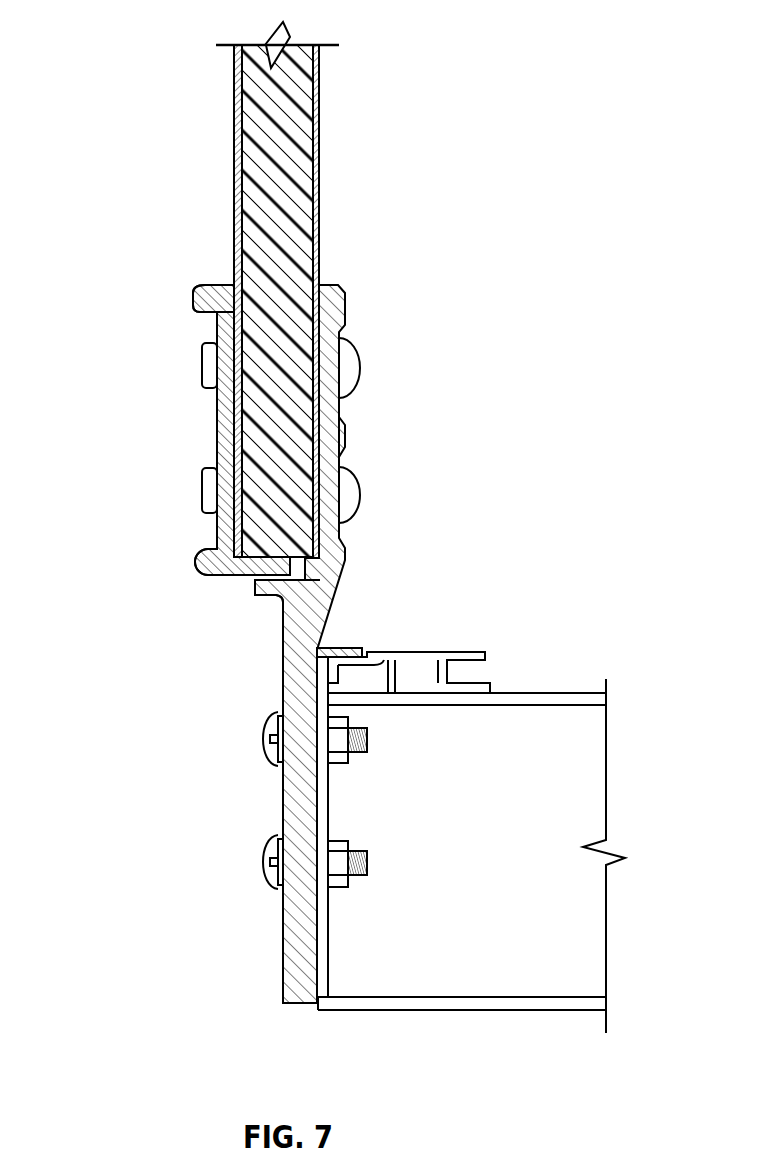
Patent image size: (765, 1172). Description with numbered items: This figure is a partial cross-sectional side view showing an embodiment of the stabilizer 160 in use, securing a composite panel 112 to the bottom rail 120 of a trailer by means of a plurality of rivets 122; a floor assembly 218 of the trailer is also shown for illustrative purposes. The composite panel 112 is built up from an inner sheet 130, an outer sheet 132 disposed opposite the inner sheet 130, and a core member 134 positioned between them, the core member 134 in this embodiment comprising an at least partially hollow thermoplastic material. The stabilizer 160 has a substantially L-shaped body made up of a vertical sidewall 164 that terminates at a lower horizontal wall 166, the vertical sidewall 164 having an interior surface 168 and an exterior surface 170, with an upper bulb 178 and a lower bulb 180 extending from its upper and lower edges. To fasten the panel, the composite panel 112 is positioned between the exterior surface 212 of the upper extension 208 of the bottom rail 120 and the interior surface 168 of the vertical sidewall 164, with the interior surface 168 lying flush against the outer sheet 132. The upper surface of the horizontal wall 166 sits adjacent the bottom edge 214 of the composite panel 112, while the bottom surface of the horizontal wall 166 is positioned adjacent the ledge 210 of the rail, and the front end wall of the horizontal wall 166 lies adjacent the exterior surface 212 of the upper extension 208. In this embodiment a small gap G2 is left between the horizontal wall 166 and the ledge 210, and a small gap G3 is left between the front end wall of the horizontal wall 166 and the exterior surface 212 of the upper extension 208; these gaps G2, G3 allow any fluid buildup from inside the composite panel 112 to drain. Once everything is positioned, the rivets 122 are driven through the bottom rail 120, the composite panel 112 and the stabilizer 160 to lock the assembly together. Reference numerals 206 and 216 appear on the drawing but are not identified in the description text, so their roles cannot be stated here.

The composite panel 112 is at (336, 143).
The bottom rail 120 is at (295, 962).
The rivets 122 is at (347, 370).
The inner sheet 130 is at (320, 208).
The outer sheet 132 is at (235, 150).
The core member 134 is at (297, 113).
The stabilizer 160 is at (217, 447).
The vertical sidewall 164 is at (233, 412).
The lower horizontal wall 166 is at (268, 572).
The interior surface 168 is at (235, 432).
The exterior surface 170 is at (217, 332).
The upper bulb 178 is at (205, 293).
The lower bulb 180 is at (193, 560).
The bracket leg 206 is at (295, 798).
The upper extension 208 is at (335, 305).
The ledge 210 is at (272, 602).
The exterior surface 212 is at (322, 443).
The bottom edge 214 is at (310, 562).
The retaining clip 216 is at (208, 377).
The floor assembly 218 is at (578, 642).
The gap G2 is at (246, 581).
The gap G3 is at (310, 582).